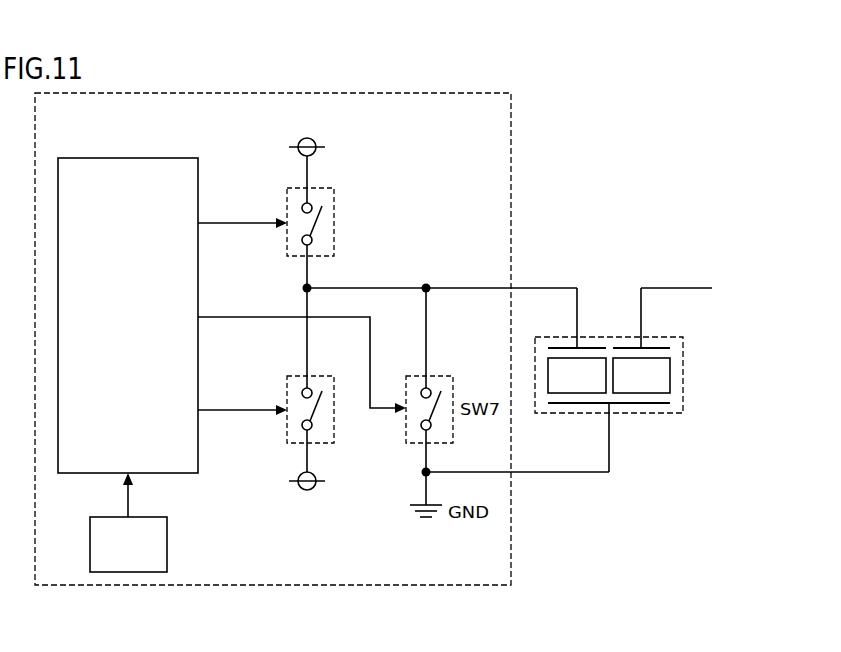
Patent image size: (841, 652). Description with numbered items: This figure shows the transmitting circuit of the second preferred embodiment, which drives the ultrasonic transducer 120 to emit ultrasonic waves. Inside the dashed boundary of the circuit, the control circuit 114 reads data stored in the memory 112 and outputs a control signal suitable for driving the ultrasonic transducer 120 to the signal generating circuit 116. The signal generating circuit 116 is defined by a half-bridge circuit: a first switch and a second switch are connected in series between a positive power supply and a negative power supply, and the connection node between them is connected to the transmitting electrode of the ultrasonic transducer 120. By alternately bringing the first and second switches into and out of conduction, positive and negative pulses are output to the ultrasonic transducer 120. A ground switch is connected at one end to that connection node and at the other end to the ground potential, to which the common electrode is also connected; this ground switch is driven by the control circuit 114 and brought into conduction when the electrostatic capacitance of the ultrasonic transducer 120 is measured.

The memory 112 is at (143, 516).
The control circuit 114 is at (143, 158).
The signal generating circuit 116 is at (361, 170).
The ultrasonic transducer 120 is at (684, 372).